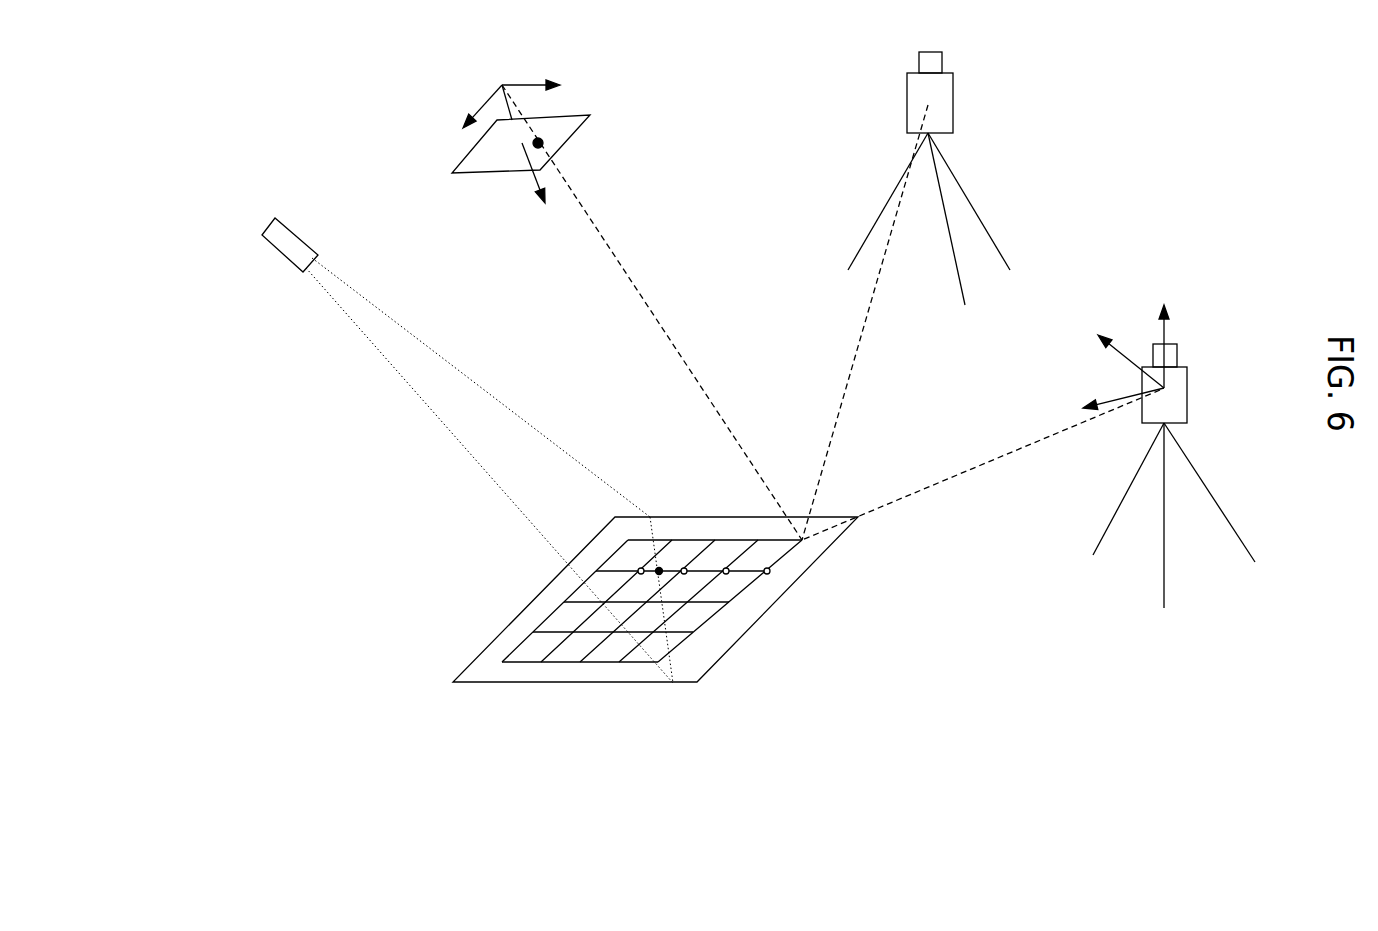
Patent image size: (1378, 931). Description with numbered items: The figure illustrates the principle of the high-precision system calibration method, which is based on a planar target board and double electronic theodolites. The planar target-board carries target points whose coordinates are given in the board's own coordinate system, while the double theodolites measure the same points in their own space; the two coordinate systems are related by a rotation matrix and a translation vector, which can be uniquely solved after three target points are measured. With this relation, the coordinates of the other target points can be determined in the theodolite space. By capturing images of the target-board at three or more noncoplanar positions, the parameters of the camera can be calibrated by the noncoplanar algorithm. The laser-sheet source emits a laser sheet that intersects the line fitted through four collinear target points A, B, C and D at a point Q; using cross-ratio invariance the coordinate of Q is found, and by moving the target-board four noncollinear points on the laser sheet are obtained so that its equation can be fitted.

The element camera is at (440, 110).
The planar target board target-board is at (855, 653).